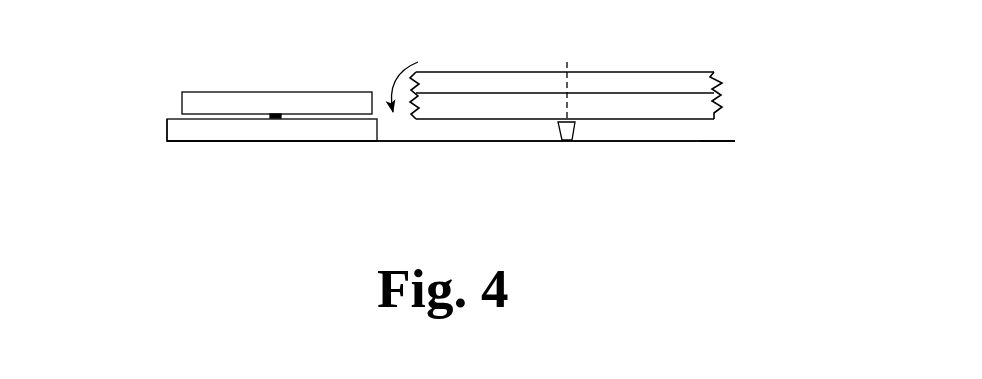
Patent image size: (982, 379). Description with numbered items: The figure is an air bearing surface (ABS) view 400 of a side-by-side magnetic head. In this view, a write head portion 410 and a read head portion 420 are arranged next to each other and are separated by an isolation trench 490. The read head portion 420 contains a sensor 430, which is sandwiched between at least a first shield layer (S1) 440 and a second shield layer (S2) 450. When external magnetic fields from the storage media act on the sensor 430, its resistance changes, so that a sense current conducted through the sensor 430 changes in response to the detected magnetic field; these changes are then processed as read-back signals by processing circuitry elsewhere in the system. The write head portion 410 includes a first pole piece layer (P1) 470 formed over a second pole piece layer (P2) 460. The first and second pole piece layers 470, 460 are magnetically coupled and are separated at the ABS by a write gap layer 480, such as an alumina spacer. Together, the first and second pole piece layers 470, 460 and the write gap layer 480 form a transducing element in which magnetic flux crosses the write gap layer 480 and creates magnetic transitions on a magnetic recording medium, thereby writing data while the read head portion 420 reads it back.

The air bearing surface (ABS) view 400 is at (627, 199).
The write head portion 410 is at (504, 144).
The read head portion 420 is at (291, 144).
The sensor 430 is at (276, 121).
The first shield layer (S1) 440 is at (163, 144).
The second shield layer (S2) 450 is at (178, 91).
The second pole piece layer (P2) 460 is at (724, 148).
The first pole piece layer (P1) 470 is at (579, 77).
The write gap layer 480 is at (729, 105).
The isolation trench 490 is at (434, 74).